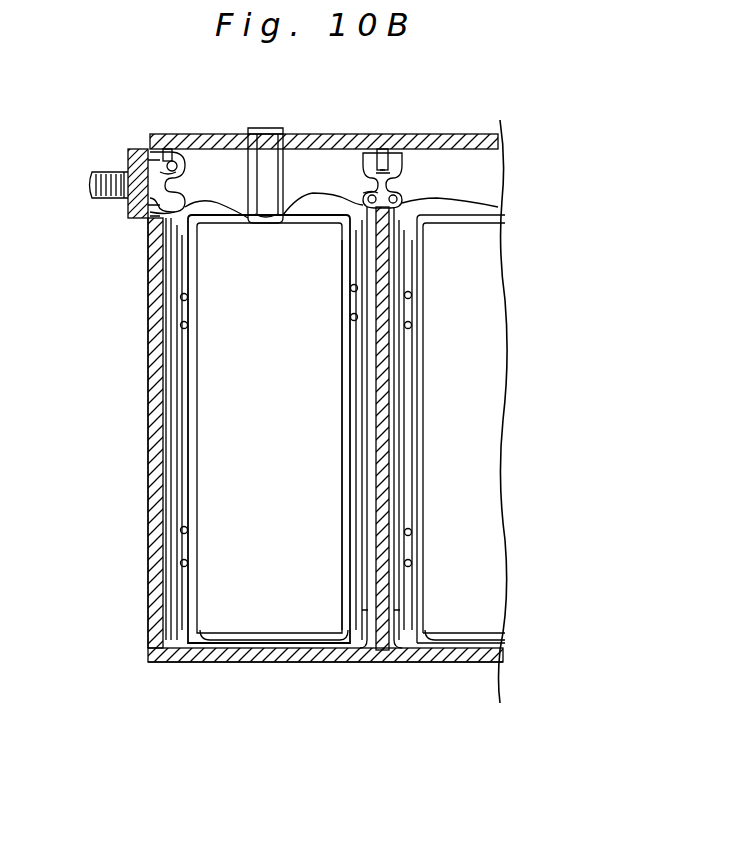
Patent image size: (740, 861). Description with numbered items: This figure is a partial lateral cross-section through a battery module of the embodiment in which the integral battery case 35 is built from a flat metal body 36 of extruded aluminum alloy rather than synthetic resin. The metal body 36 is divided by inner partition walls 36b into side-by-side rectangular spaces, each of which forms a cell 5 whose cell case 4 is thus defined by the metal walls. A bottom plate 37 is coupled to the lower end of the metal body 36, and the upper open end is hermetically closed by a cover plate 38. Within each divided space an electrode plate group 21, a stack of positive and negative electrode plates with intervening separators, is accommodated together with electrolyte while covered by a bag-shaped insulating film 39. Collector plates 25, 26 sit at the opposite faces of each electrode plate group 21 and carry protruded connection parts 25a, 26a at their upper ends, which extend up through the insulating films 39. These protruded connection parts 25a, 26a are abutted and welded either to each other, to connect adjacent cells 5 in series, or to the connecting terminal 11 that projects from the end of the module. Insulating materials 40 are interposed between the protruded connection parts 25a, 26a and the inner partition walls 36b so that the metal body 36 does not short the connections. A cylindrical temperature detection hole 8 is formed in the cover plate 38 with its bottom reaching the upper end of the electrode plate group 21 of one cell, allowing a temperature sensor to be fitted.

The cell case 4 is at (246, 607).
The cell 5 is at (312, 668).
The temperature detection hole 8 is at (267, 148).
The connecting terminal 11 is at (103, 171).
The electrode plate group 21 is at (283, 383).
The collector plate 25 is at (175, 496).
The protruded connection part 25a is at (163, 150).
The collector plate 26 is at (365, 476).
The protruded connection part 26a is at (363, 193).
The integral battery case 35 is at (146, 399).
The metal body 36 is at (157, 447).
The inner partition wall 36b is at (383, 505).
The bottom plate 37 is at (273, 655).
The cover plate 38 is at (350, 140).
The insulating film 39 is at (212, 203).
The insulating material 40 is at (392, 186).